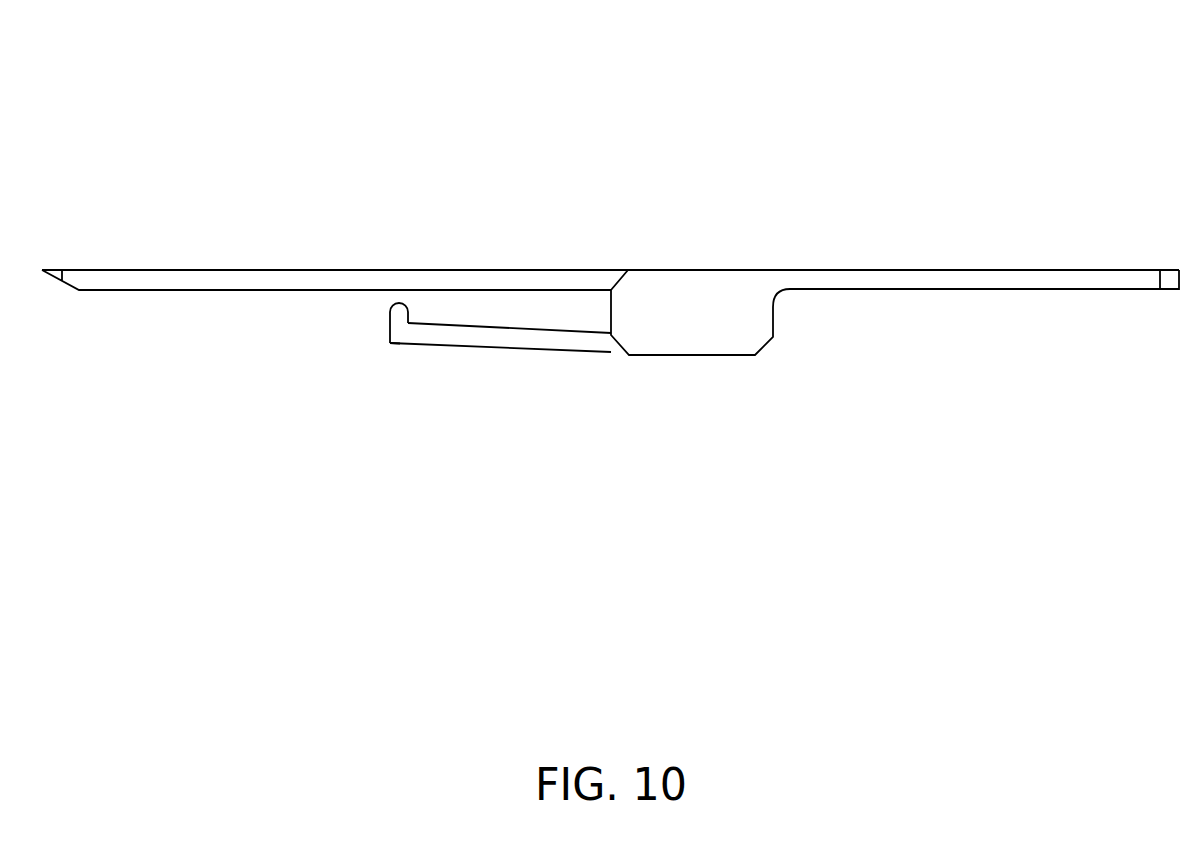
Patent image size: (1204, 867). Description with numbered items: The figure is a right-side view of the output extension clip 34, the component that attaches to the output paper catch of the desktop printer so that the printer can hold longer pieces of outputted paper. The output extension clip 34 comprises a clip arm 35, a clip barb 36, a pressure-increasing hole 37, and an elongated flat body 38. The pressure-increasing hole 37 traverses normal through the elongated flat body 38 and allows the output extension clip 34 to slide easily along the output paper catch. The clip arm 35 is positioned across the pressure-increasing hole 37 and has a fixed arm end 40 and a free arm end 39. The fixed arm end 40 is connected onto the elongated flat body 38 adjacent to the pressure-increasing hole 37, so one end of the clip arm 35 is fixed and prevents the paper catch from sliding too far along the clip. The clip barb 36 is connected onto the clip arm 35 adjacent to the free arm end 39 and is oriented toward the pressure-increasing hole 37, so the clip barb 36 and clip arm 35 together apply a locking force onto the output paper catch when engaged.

The output extension clip 34 is at (610, 228).
The clip arm 35 is at (497, 340).
The clip barb 36 is at (390, 312).
The pressure-increasing hole 37 is at (538, 270).
The elongated flat body 38 is at (858, 280).
The free arm end 39 is at (397, 362).
The fixed arm end 40 is at (622, 370).